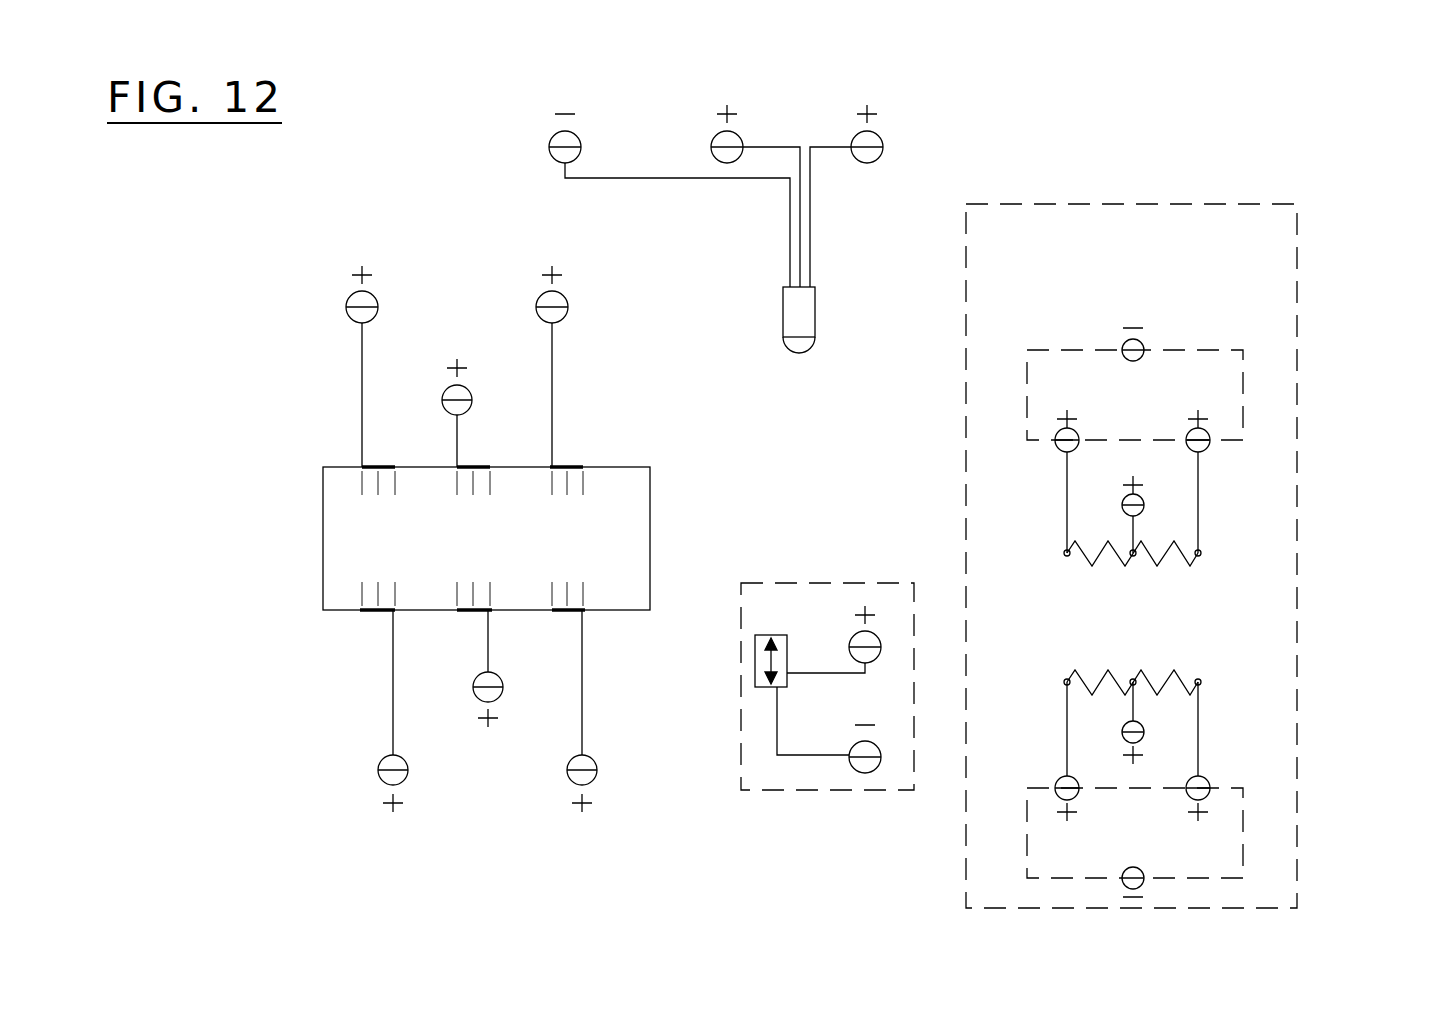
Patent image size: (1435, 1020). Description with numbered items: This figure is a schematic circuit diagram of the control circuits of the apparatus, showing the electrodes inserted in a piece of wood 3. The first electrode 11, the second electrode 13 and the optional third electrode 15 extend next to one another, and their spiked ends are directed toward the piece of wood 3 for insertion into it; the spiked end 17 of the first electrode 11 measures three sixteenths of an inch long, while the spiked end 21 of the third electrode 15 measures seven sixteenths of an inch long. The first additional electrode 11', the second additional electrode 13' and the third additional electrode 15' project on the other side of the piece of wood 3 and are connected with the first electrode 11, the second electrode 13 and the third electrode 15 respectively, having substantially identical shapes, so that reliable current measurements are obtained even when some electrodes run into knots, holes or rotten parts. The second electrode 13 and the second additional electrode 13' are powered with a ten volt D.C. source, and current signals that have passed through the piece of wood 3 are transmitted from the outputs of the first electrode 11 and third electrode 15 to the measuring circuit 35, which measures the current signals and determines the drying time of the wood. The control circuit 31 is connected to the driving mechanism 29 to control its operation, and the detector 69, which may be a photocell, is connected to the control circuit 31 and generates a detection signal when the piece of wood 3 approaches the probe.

The piece of wood 3 is at (650, 497).
The first electrode 11 is at (906, 409).
The first additional electrode 11' is at (930, 717).
The second electrode 13 is at (770, 381).
The second additional electrode 13' is at (762, 743).
The third electrode 15 is at (663, 409).
The third additional electrode 15' is at (659, 715).
The spiked end 17 is at (582, 477).
The spiked end 21 is at (397, 488).
The driving mechanism 29 is at (755, 668).
The control circuit 31 is at (835, 583).
The measuring circuit 35 is at (1297, 230).
The detector 69 is at (805, 318).